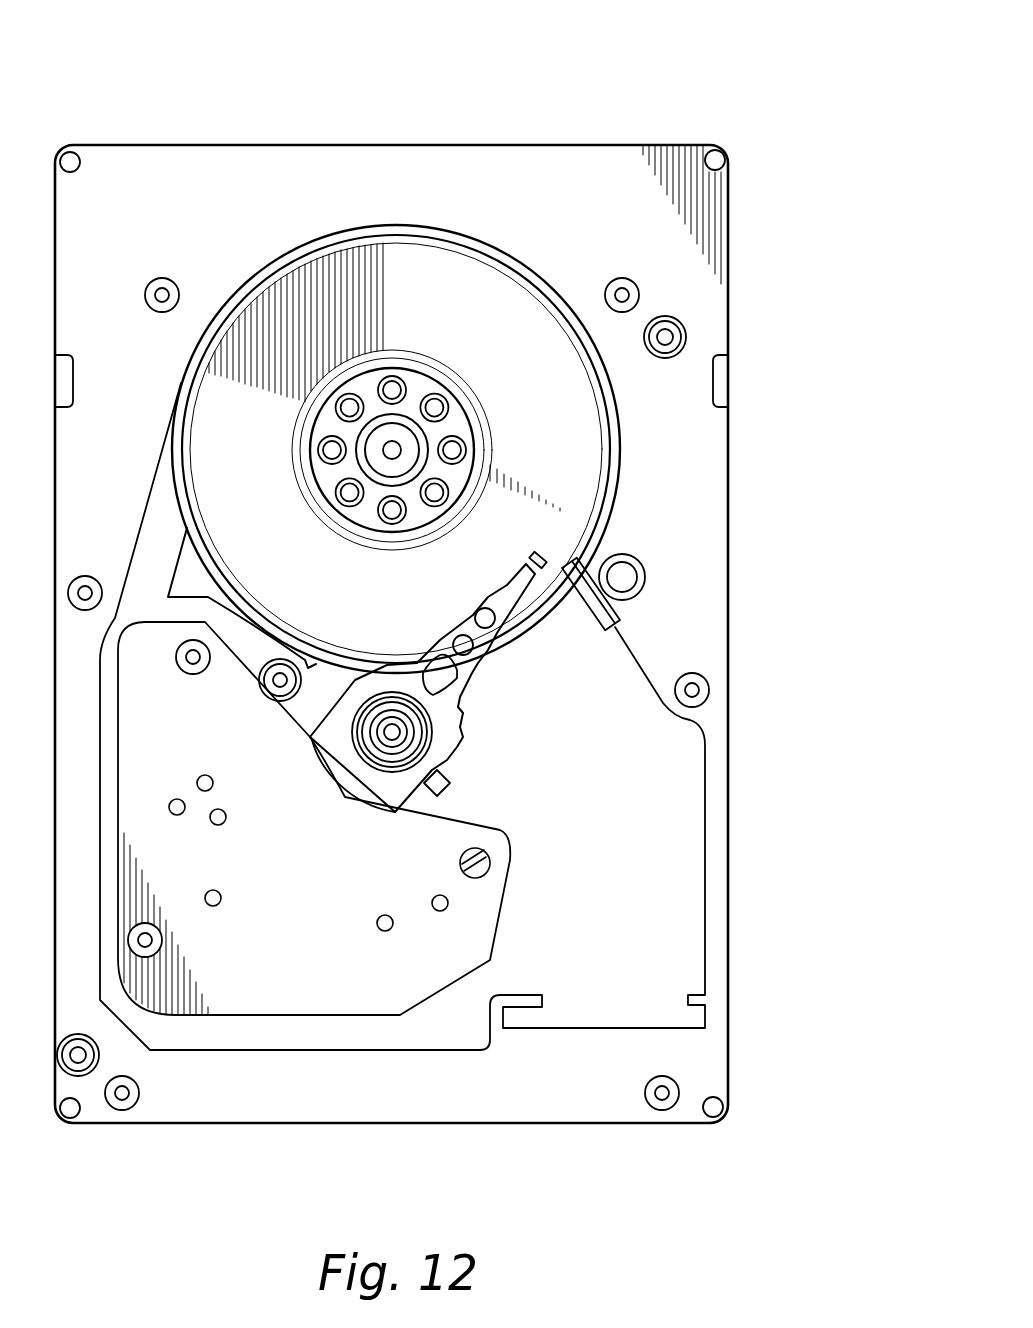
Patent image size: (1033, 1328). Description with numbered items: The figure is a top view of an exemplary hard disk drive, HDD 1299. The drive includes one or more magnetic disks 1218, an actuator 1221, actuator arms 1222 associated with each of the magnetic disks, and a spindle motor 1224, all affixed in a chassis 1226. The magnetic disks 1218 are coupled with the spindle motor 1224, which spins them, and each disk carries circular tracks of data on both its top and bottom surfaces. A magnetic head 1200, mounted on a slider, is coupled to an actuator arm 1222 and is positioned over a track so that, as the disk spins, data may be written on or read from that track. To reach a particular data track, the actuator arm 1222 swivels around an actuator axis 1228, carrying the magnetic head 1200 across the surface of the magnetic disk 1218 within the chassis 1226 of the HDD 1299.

The HDD 1299 is at (627, 77).
The chassis 1226 is at (172, 148).
The magnetic disk 1218 is at (480, 283).
The spindle motor 1224 is at (405, 448).
The magnetic head 1200 is at (530, 562).
The actuator arm 1222 is at (470, 628).
The actuator axis 1228 is at (396, 735).
The actuator 1221 is at (488, 918).